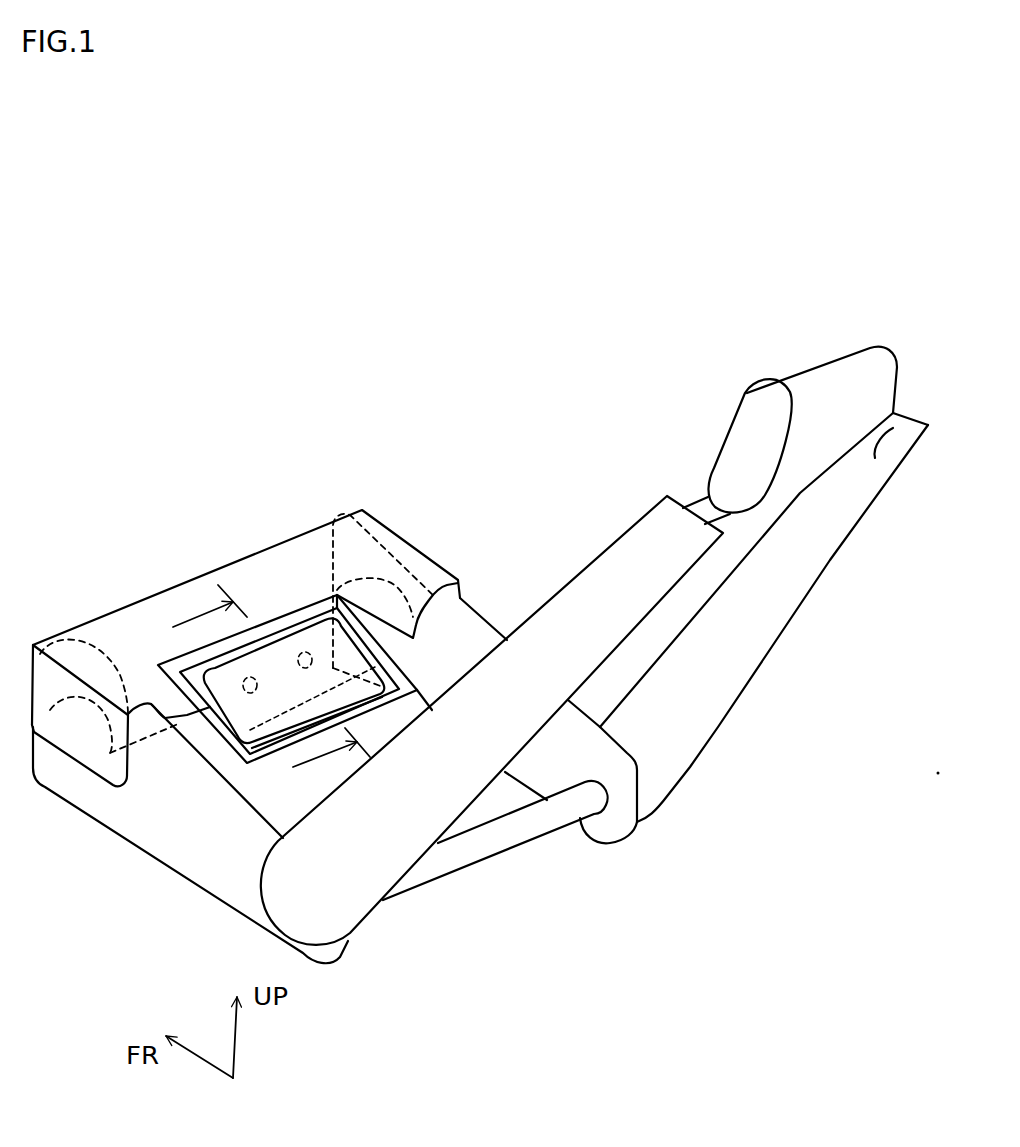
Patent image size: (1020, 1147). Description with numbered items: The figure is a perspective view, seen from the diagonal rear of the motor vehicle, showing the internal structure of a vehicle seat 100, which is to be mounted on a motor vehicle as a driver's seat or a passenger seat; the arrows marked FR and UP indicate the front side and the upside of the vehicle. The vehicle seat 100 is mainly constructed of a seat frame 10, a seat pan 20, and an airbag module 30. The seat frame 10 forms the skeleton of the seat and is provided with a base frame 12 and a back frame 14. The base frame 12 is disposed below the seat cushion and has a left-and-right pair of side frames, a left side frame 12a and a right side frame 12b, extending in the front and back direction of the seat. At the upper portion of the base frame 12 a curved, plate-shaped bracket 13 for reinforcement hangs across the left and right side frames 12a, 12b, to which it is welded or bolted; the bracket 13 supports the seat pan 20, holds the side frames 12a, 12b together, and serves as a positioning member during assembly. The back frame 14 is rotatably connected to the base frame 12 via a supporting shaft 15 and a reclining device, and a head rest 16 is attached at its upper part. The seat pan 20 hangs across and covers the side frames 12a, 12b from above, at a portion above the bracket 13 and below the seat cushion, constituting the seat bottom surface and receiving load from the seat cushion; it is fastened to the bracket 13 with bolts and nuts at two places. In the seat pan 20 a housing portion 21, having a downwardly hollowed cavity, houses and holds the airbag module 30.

The vehicle seat 100 is at (490, 365).
The seat frame 10 is at (618, 528).
The base frame 12 is at (197, 890).
The left side frame 12a is at (150, 827).
The right side frame 12b is at (463, 632).
The bracket 13 is at (147, 683).
The back frame 14 is at (715, 728).
The supporting shaft 15 is at (502, 837).
The head rest 16 is at (740, 470).
The seat pan 20 is at (325, 522).
The housing portion 21 is at (200, 677).
The airbag module 30 is at (275, 652).